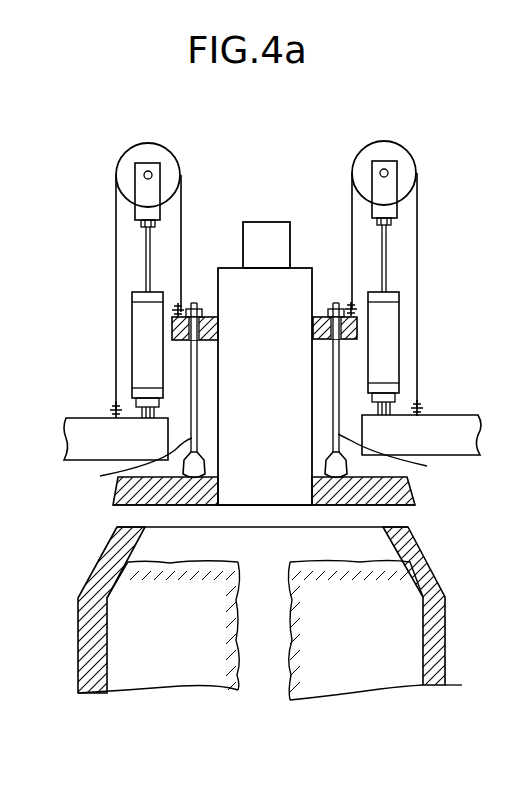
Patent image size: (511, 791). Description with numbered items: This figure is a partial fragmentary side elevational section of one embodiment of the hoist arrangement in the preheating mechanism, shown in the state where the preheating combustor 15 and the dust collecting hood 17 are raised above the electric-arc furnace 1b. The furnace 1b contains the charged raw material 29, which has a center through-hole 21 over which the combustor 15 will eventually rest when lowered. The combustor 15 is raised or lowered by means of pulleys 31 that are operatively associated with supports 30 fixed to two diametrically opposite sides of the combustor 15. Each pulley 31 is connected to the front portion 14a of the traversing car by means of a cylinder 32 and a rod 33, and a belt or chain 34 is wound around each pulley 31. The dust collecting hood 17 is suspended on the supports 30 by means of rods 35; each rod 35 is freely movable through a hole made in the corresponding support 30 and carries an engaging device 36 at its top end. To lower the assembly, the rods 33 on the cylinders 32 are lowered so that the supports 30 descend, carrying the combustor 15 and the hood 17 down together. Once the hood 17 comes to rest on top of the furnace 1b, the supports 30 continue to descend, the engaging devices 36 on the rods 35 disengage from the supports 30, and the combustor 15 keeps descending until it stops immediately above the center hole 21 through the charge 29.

The pulley 31 is at (148, 143).
The rod 33 is at (388, 257).
The belt or chain 34 is at (418, 309).
The cylinder 32 is at (400, 350).
The engaging device 36 is at (180, 304).
The preheating combustor 15 is at (300, 275).
The support 30 is at (180, 341).
The front portion of the traversing car 14a is at (82, 428).
The rod 35 is at (263, 463).
The dust collecting hood 17 is at (400, 488).
The raw material 29 is at (385, 592).
The electric-arc furnace 1b is at (437, 636).
The center through-hole 21 is at (275, 656).